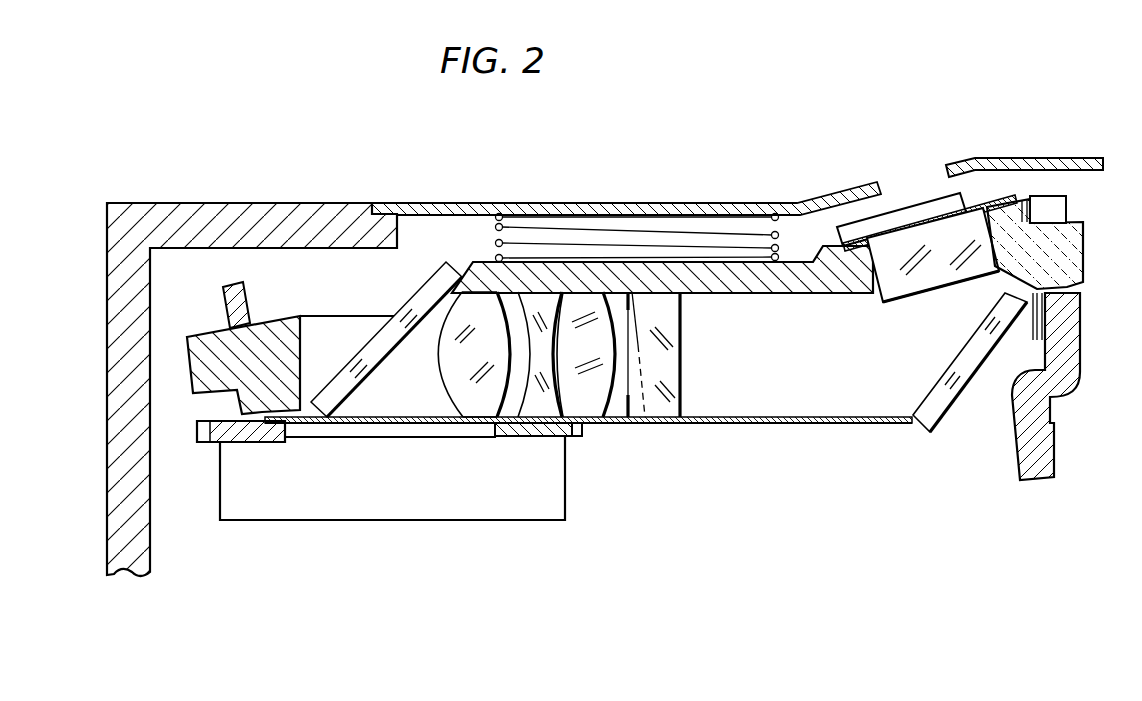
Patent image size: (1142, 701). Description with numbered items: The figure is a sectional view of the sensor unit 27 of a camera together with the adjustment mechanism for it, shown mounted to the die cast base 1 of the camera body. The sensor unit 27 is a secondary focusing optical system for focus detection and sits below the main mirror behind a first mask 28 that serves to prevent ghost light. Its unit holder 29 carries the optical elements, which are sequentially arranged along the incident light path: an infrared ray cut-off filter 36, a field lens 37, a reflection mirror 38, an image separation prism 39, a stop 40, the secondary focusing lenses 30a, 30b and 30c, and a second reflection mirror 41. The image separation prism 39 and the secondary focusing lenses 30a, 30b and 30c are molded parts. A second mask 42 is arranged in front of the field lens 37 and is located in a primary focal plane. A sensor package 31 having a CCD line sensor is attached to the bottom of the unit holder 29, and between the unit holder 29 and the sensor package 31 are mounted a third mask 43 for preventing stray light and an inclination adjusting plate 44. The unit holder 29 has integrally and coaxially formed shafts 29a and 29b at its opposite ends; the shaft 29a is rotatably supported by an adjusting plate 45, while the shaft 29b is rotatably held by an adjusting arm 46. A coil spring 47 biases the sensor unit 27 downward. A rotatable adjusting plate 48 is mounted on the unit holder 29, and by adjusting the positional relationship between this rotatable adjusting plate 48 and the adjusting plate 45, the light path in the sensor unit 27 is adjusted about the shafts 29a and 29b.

The die cast base 1 is at (228, 216).
The sensor unit 27 is at (838, 410).
The first mask 28 is at (1006, 163).
The unit holder 29 is at (668, 272).
The shaft 29a is at (1085, 248).
The shaft 29b is at (205, 368).
The secondary focusing lens 30a is at (591, 300).
The secondary focusing lens 30b is at (538, 305).
The secondary focusing lens 30c is at (473, 305).
The sensor package 31 is at (357, 521).
The infrared ray cut-off filter 36 is at (908, 212).
The field lens 37 is at (938, 235).
The reflection mirror 38 is at (937, 414).
The image separation prism 39 is at (665, 408).
The stop 40 is at (626, 400).
The second reflection mirror 41 is at (424, 287).
The second mask 42 is at (890, 232).
The third mask 43 is at (459, 438).
The inclination adjusting plate 44 is at (271, 441).
The adjusting plate 45 is at (1034, 478).
The adjusting arm 46 is at (251, 306).
The coil spring 47 is at (775, 213).
The rotatable adjusting plate 48 is at (1030, 337).